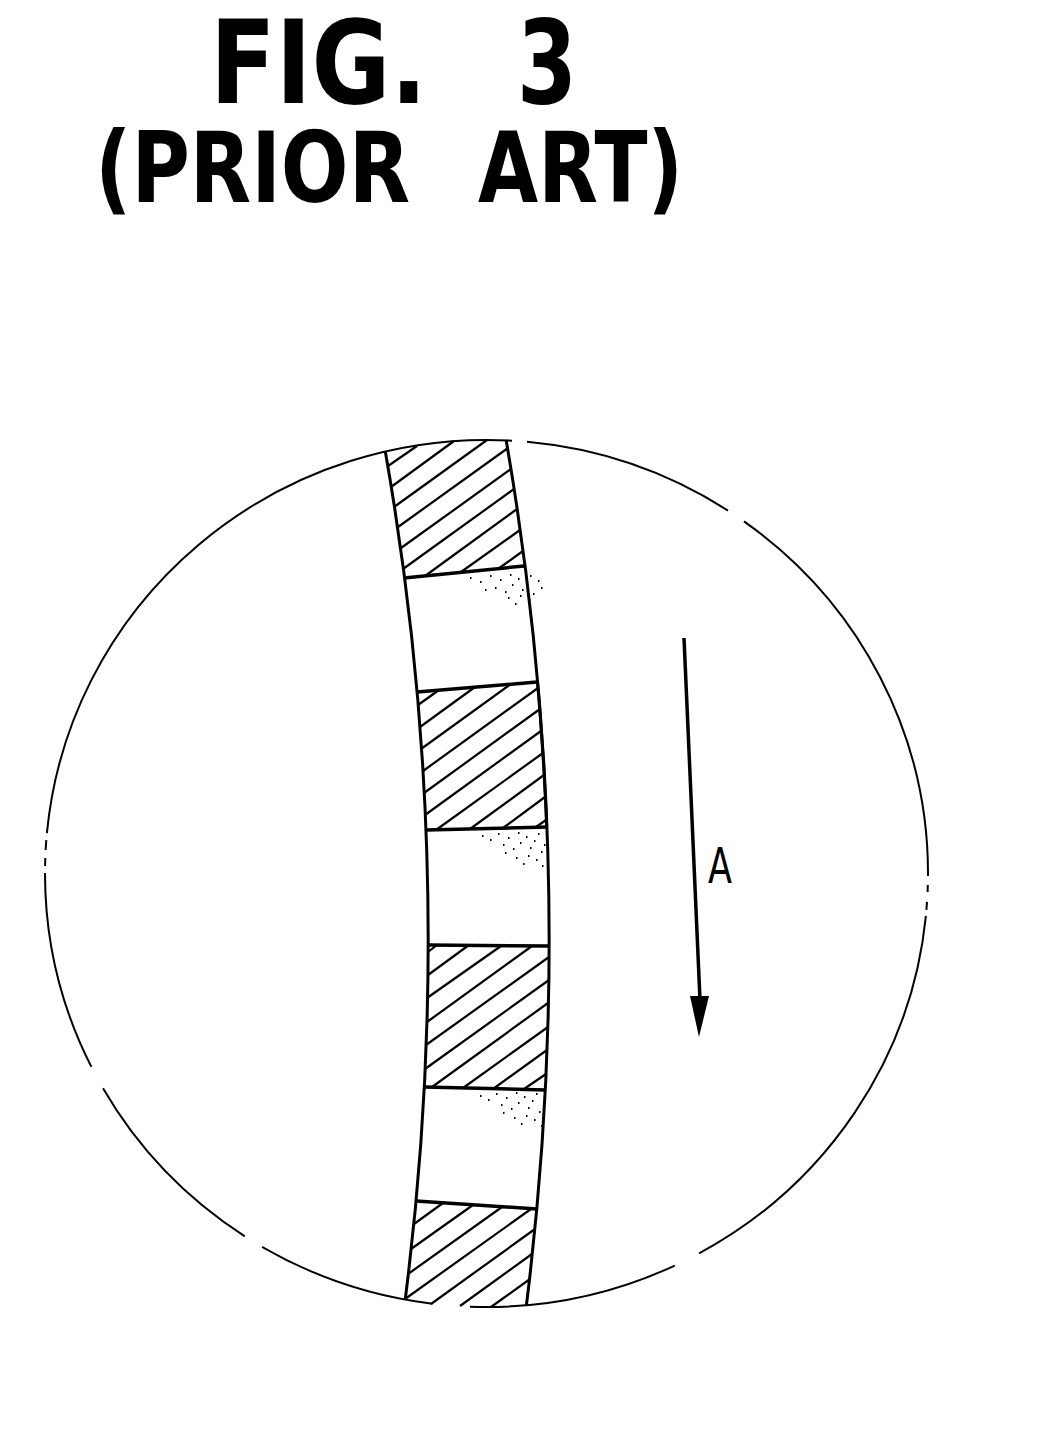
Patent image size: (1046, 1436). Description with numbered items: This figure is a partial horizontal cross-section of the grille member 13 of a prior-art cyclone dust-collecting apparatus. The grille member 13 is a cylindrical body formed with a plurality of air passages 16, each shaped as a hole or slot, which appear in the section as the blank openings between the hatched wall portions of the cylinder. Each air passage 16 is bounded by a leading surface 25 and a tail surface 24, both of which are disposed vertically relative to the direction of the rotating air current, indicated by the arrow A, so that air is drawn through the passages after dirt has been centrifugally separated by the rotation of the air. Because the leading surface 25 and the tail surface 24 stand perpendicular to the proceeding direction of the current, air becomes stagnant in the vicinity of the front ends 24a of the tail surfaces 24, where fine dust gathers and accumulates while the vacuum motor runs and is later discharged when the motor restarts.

The grille member 13 is at (448, 873).
The air passage 16 is at (455, 915).
The tail surface 24 is at (485, 830).
The front end of the tail surface 24a is at (547, 811).
The leading surface 25 is at (510, 945).